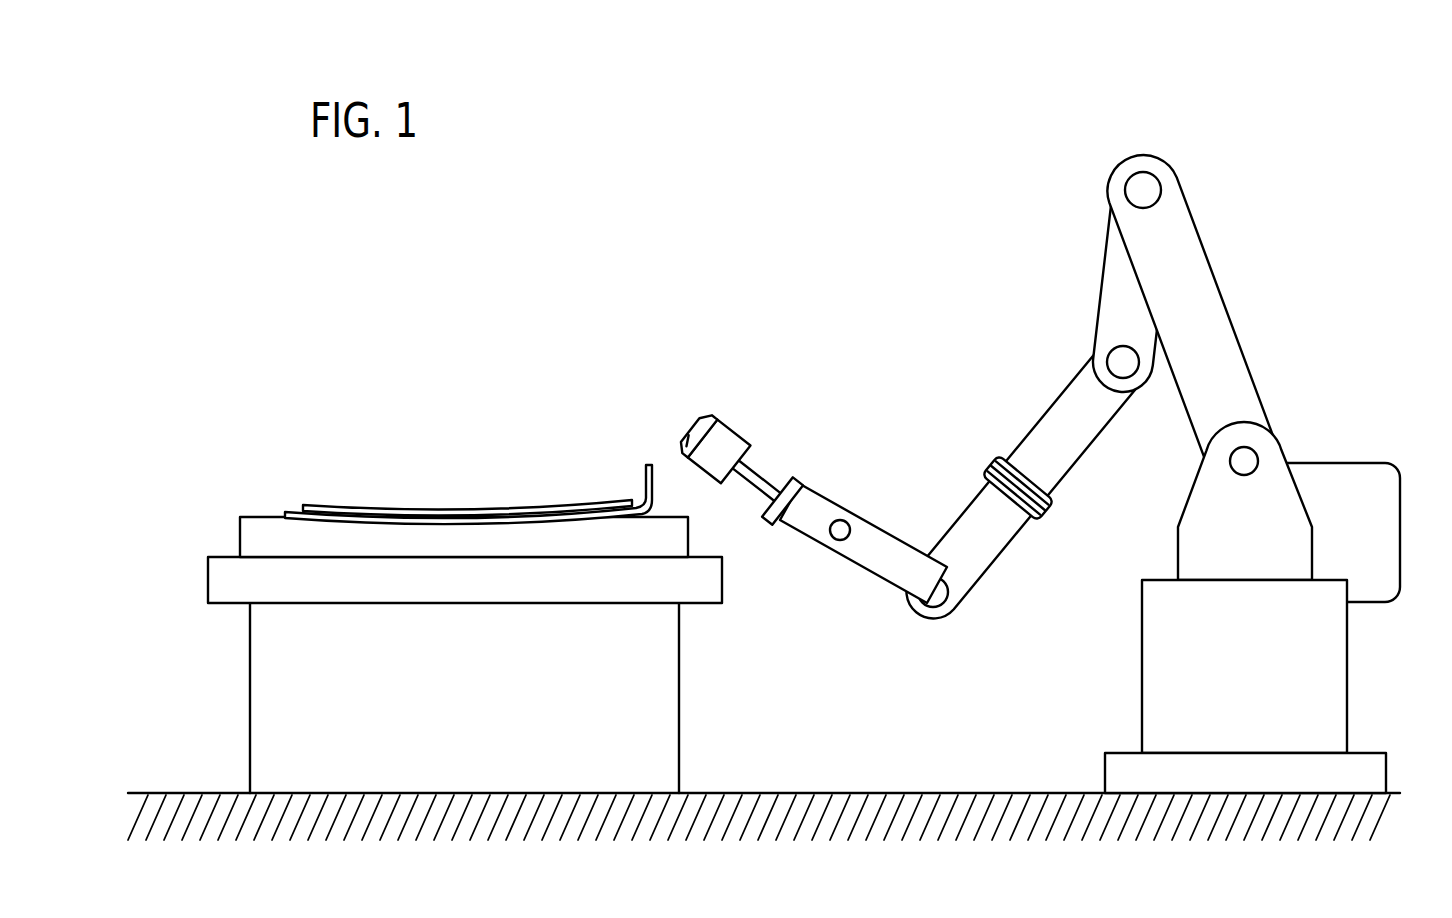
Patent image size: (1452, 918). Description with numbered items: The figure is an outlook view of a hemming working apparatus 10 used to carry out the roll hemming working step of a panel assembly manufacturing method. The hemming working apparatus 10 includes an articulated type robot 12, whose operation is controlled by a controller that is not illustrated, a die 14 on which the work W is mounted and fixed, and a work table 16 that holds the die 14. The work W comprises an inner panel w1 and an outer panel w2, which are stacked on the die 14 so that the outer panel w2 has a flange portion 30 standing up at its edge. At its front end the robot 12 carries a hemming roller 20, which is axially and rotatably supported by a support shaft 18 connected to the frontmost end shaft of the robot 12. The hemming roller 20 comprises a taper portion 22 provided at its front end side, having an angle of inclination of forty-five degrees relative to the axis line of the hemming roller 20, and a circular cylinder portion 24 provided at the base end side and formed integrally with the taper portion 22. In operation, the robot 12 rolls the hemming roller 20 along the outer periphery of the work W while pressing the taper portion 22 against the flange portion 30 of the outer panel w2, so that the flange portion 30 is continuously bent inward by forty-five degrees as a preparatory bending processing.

The hemming working apparatus 10 is at (1352, 61).
The articulated type robot 12 is at (1183, 157).
The die 14 is at (686, 533).
The work table 16 is at (706, 586).
The support shaft 18 is at (763, 478).
The hemming roller 20 is at (760, 367).
The taper portion 22 is at (708, 414).
The circular cylinder portion 24 is at (740, 437).
The flange portion 30 is at (653, 483).
The work W is at (497, 524).
The inner panel w1 is at (354, 508).
The outer panel w2 is at (497, 531).